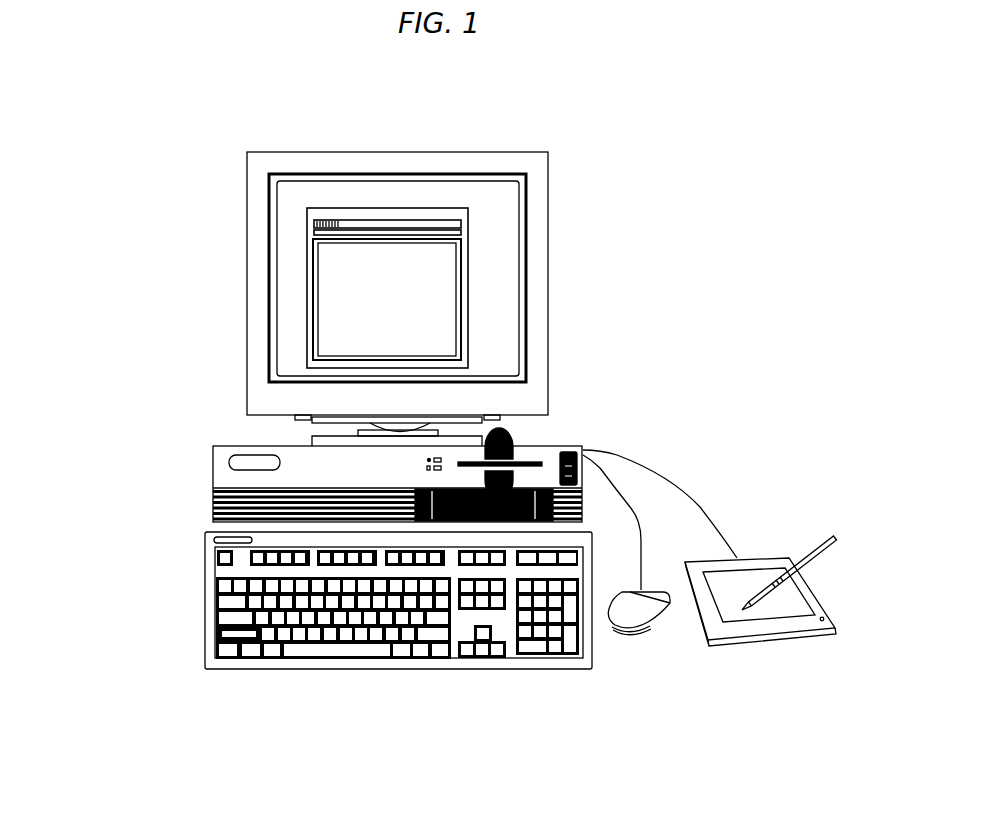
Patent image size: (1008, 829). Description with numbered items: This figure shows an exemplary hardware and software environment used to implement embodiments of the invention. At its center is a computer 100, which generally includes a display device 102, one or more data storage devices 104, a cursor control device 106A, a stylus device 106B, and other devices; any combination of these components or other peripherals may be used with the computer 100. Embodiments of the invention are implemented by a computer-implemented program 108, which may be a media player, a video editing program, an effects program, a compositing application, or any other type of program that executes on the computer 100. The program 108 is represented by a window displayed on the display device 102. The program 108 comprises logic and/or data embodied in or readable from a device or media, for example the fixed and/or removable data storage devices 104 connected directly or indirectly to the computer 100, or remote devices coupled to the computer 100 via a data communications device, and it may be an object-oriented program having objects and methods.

The computer 100 is at (214, 461).
The display device 102 is at (531, 148).
The data storage device 104 is at (531, 456).
The cursor control device 106A is at (642, 646).
The stylus device 106B is at (776, 649).
The computer-implemented program 108 is at (470, 285).